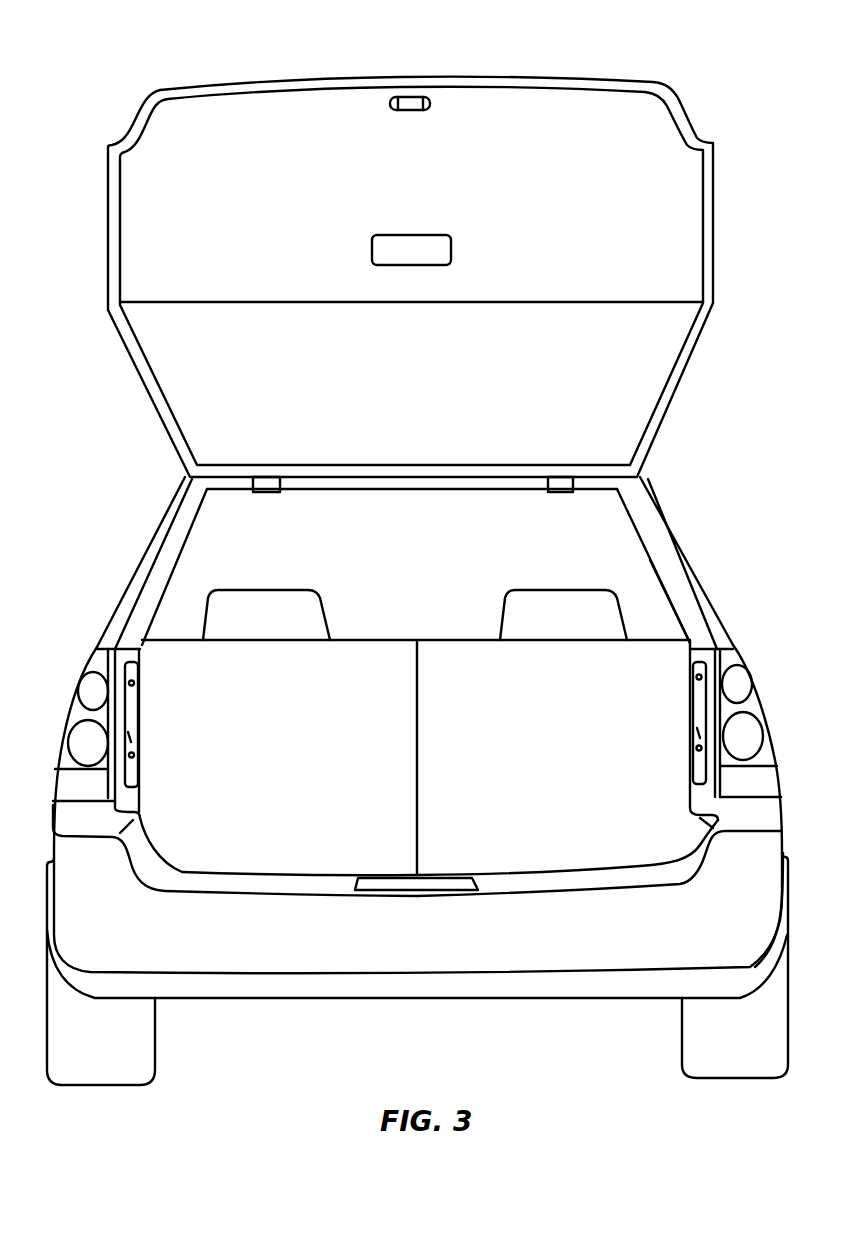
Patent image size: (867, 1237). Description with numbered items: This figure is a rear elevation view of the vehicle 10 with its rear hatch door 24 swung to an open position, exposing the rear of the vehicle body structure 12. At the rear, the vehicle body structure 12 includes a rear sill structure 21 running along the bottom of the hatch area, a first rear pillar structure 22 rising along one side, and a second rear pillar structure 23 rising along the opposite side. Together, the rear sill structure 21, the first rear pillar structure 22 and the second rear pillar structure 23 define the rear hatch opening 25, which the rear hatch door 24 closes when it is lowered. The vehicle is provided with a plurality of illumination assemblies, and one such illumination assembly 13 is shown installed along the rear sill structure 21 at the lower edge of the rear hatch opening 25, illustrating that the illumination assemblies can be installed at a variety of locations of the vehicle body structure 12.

The vehicle 10 is at (428, 47).
The vehicle body structure 12 is at (677, 518).
The illumination assembly 13 is at (446, 884).
The rear sill structure 21 is at (554, 883).
The first rear pillar structure 22 is at (182, 530).
The second rear pillar structure 23 is at (663, 558).
The rear hatch door 24 is at (644, 380).
The rear hatch opening 25 is at (683, 605).